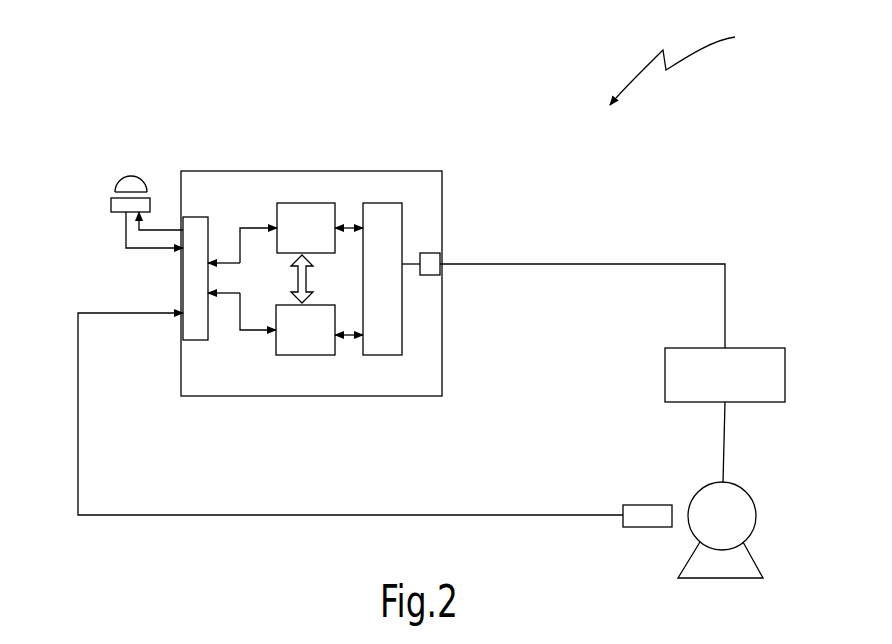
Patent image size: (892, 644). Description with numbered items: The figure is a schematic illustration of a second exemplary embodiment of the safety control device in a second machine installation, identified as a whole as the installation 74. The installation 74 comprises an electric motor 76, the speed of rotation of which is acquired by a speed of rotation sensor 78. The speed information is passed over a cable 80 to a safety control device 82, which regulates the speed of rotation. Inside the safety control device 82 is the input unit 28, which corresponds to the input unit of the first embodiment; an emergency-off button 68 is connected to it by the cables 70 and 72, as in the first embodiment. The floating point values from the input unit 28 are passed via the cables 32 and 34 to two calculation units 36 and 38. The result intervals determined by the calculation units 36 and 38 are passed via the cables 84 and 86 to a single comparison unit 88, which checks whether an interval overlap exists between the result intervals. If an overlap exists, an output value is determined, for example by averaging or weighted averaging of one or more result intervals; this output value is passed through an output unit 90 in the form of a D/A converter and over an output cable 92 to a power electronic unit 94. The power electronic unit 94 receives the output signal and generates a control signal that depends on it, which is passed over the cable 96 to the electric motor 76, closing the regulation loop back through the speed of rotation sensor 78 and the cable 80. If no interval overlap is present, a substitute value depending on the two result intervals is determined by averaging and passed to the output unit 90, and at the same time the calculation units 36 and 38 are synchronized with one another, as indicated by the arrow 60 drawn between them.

The input unit 28 is at (193, 330).
The cable 32 is at (248, 225).
The cable 34 is at (256, 337).
The calculation unit 36 is at (297, 203).
The calculation unit 38 is at (307, 355).
The arrow 60 is at (293, 283).
The emergency-off button 68 is at (112, 205).
The cable 70 is at (157, 230).
The cable 72 is at (126, 250).
The installation 74 is at (687, 60).
The electric motor 76 is at (743, 562).
The speed of rotation sensor 78 is at (650, 520).
The cable 80 is at (270, 516).
The safety control device 82 is at (413, 172).
The cable 84 is at (350, 228).
The cable 86 is at (343, 337).
The comparison unit 88 is at (388, 230).
The output unit 90 is at (440, 253).
The output cable 92 is at (580, 263).
The power electronic unit 94 is at (673, 362).
The cable 96 is at (727, 428).